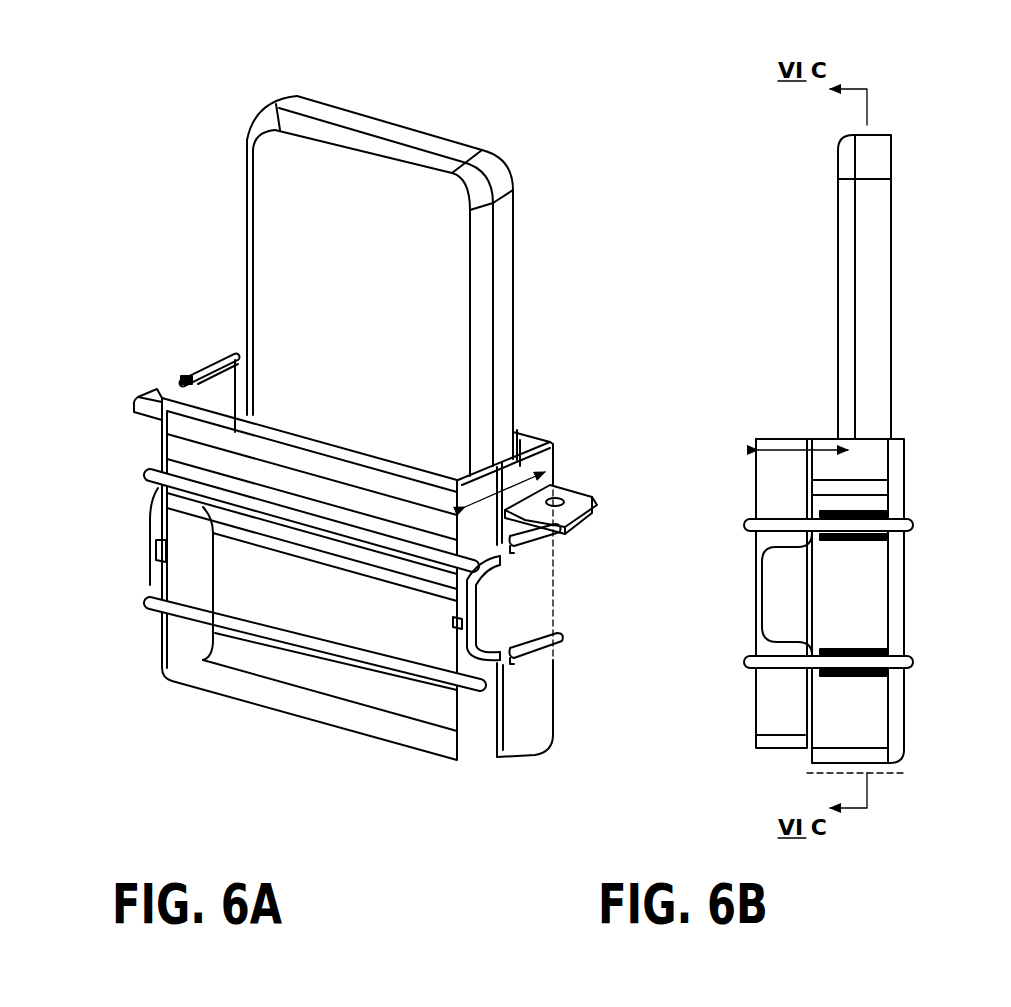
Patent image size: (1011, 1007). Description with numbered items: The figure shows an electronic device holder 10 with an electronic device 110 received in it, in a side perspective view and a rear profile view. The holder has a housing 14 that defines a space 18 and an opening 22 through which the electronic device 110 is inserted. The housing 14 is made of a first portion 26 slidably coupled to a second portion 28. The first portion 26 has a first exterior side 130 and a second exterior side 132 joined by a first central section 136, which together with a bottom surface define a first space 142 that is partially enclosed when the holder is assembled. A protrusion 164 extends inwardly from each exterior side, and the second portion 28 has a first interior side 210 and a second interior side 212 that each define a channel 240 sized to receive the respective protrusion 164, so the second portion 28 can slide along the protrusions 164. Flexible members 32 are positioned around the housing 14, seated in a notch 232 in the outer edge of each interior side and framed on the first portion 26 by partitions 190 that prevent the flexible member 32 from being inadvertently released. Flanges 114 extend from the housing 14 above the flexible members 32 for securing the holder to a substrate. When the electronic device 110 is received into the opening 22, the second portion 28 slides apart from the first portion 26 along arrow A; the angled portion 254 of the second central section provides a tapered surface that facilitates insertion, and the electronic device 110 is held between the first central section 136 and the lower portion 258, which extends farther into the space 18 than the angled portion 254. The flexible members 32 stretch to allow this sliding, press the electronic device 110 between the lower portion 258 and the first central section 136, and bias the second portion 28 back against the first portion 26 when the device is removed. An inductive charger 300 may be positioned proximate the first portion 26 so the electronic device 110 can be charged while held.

In FIG. 6A, the electronic device holder 10 is at (170, 155).
In FIG. 6B, the electronic device holder 10 is at (764, 235).
In FIG. 6A, the housing 14 is at (305, 486).
In FIG. 6B, the housing 14 is at (816, 504).
In FIG. 6A, the space 18 is at (353, 363).
In FIG. 6B, the opening 22 is at (816, 539).
In FIG. 6A, the first portion 26 is at (541, 718).
In FIG. 6B, the first portion 26 is at (888, 430).
In FIG. 6A, the second portion 28 is at (280, 627).
In FIG. 6B, the second portion 28 is at (758, 587).
In FIG. 6A, the flexible member 32 is at (274, 575).
In FIG. 6B, the flexible member 32 is at (861, 606).
In FIG. 6A, the electronic device 110 is at (380, 249).
In FIG. 6B, the electronic device 110 is at (908, 287).
In FIG. 6A, the flange 114 is at (356, 461).
In FIG. 6B, the flange 114 is at (923, 449).
In FIG. 6A, the first exterior side 130 is at (172, 346).
In FIG. 6B, the second exterior side 132 is at (892, 769).
In FIG. 6A, the first central section 136 is at (545, 397).
In FIG. 6A, the first space 142 is at (546, 406).
In FIG. 6A, the protrusion 164 is at (344, 574).
In FIG. 6A, the partition 190 is at (580, 565).
In FIG. 6B, the partition 190 is at (899, 601).
In FIG. 6A, the first interior side 210 is at (131, 365).
In FIG. 6A, the second interior side 212 is at (543, 401).
In FIG. 6B, the second interior side 212 is at (789, 743).
In FIG. 6A, the notch 232 is at (348, 656).
In FIG. 6B, the notch 232 is at (738, 622).
In FIG. 6A, the channel 240 is at (262, 595).
In FIG. 6A, the angled portion 254 is at (259, 503).
In FIG. 6A, the lower portion 258 is at (301, 633).
In FIG. 6B, the inductive charger 300 is at (760, 805).
In FIG. 6A, the arrow A is at (535, 447).
In FIG. 6B, the arrow A is at (794, 415).